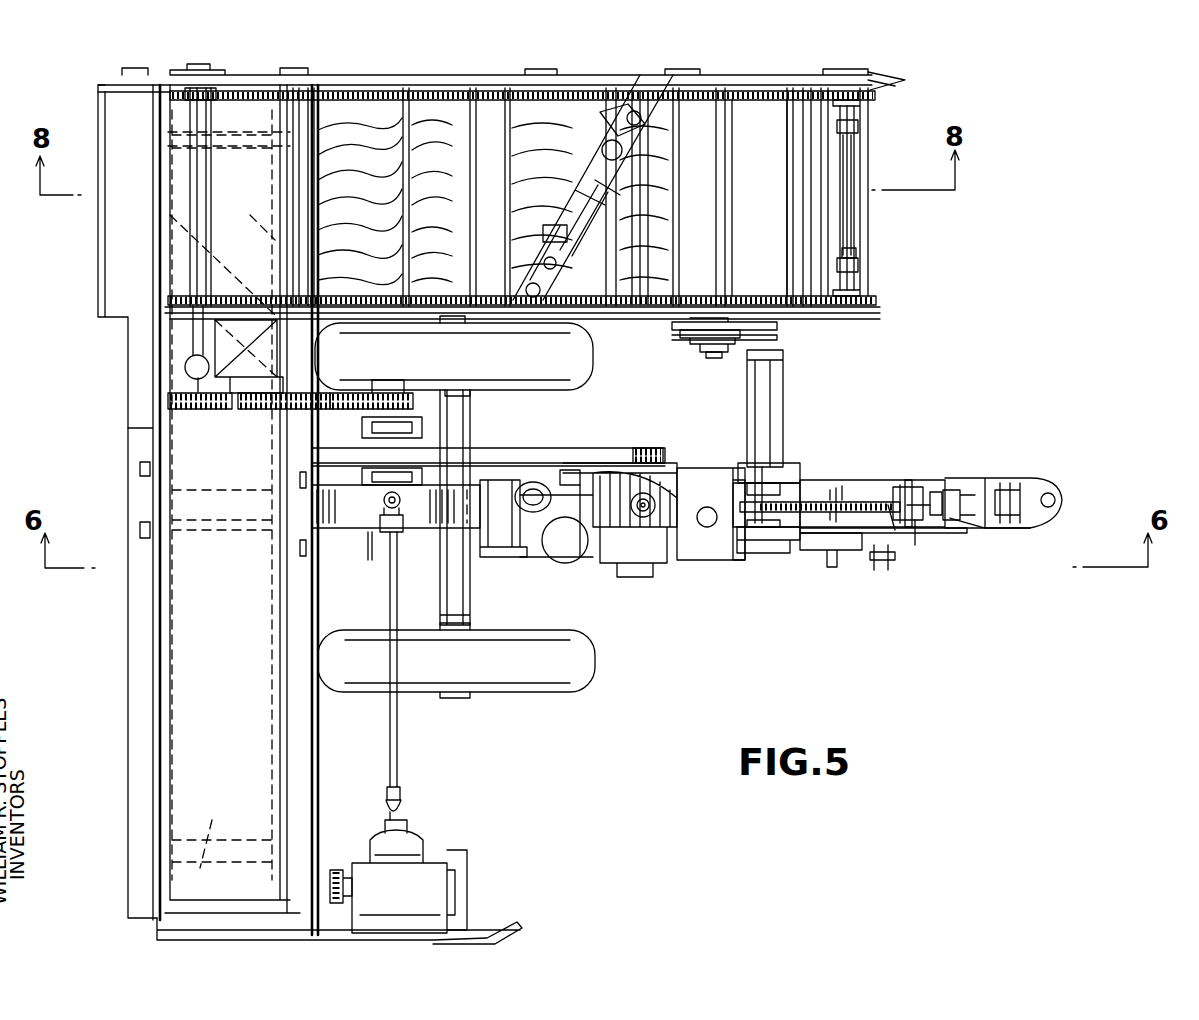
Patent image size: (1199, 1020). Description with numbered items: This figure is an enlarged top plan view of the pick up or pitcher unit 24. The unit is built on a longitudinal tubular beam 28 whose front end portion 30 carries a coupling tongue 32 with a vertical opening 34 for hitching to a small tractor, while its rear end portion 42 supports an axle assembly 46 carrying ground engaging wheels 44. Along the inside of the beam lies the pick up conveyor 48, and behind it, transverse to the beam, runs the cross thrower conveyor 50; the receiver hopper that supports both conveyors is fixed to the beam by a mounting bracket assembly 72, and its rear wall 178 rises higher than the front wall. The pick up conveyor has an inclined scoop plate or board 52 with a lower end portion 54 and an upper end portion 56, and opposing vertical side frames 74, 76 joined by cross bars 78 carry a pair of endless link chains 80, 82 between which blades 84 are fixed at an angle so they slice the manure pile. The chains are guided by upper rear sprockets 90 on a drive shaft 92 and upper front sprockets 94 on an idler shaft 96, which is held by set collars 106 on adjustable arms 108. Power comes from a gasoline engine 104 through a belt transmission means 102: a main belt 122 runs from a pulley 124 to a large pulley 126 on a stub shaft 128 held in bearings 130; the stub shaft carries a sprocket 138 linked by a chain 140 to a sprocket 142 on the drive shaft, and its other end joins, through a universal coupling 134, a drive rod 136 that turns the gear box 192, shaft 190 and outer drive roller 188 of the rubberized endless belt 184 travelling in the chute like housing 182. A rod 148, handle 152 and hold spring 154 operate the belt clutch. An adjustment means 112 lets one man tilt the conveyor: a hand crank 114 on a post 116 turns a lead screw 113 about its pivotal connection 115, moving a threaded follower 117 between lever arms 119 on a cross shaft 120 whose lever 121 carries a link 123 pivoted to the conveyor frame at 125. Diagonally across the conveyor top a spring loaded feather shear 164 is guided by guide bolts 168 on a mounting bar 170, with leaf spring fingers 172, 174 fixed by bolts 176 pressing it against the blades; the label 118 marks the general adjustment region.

The pitcher unit 24 is at (797, 454).
The longitudinal tubular beam 28 is at (813, 476).
The front end portion 30 is at (974, 531).
The coupling tongue 32 is at (1033, 522).
The vertical opening 34 is at (1042, 492).
The rear end portion 42 is at (350, 530).
The ground engaging wheels 44 is at (598, 374).
The axle assembly 46 is at (461, 594).
The pick up conveyor 48 is at (876, 246).
The cross thrower conveyor 50 is at (157, 684).
The scoop plate or board 52 is at (682, 159).
The lower end portion 54 is at (680, 208).
The upper end portion 56 is at (194, 253).
The mounting bracket assembly 72 is at (140, 506).
The vertical side frame 74 is at (515, 82).
The vertical side frame 76 is at (589, 321).
The cross bars 78 is at (841, 221).
The endless link chain 80 is at (706, 90).
The endless link chain 82 is at (702, 292).
The blades 84 is at (463, 222).
The upper rear sprockets 90 is at (196, 302).
The drive shaft 92 is at (202, 328).
The upper front sprockets 94 is at (870, 85).
The idler shaft 96 is at (843, 158).
The belt transmission means 102 is at (539, 442).
The gasoline engine 104 is at (660, 578).
The set collars 106 is at (859, 126).
The adjustable arms 108 is at (855, 244).
The adjustment means 112 is at (932, 492).
The lead screw 113 is at (875, 514).
The hand crank 114 is at (956, 490).
The pivotal connection 115 is at (906, 482).
The post 116 is at (895, 538).
The threaded follower 117 is at (732, 543).
The hydraulic unit 118 is at (794, 395).
The lever arms 119 is at (759, 454).
The cross shaft 120 is at (772, 376).
The lever 121 is at (717, 358).
The main belt 122 is at (460, 452).
The link 123 is at (678, 338).
The pulley 124 is at (652, 448).
The pivot 125 is at (696, 332).
The large pulley 126 is at (338, 460).
The stub shaft 128 is at (382, 506).
The bearings 130 is at (405, 520).
The universal coupling 134 is at (354, 540).
The drive rod 136 is at (396, 748).
The sprocket 138 is at (404, 400).
The chain 140 is at (268, 417).
The sprocket 142 is at (186, 416).
The rod 148 is at (762, 576).
The handle 152 is at (966, 543).
The hold spring 154 is at (874, 574).
The feather shear 164 is at (598, 156).
The guide bolts 168 is at (552, 244).
The mounting bar 170 is at (585, 202).
The leaf spring finger 172 is at (602, 188).
The leaf spring finger 174 is at (598, 112).
The bolts 176 is at (671, 122).
The rear wall 178 is at (98, 216).
The chute like housing 182 is at (158, 618).
The rubberized endless belt 184 is at (238, 728).
The outer drive roller 188 is at (204, 831).
The shaft 190 is at (326, 862).
The gear box 192 is at (433, 864).